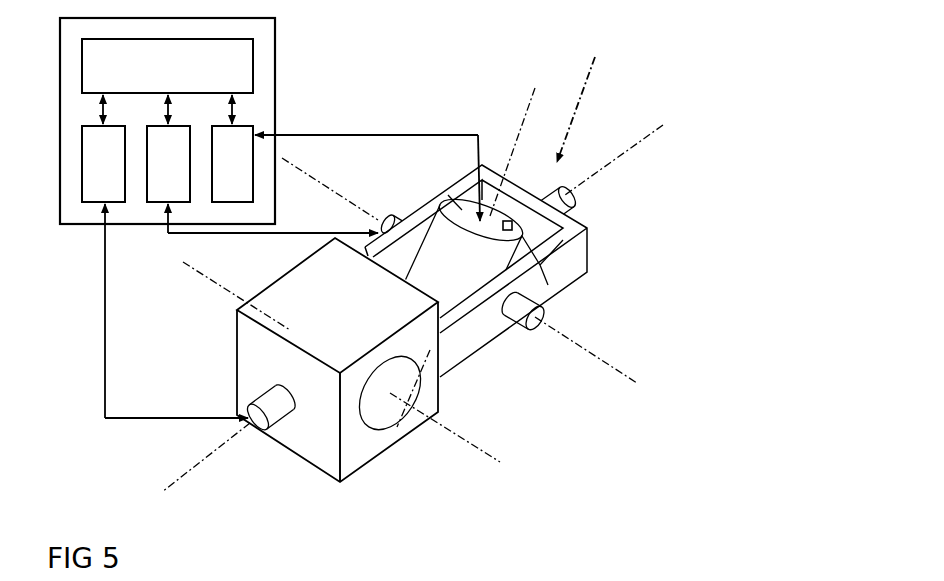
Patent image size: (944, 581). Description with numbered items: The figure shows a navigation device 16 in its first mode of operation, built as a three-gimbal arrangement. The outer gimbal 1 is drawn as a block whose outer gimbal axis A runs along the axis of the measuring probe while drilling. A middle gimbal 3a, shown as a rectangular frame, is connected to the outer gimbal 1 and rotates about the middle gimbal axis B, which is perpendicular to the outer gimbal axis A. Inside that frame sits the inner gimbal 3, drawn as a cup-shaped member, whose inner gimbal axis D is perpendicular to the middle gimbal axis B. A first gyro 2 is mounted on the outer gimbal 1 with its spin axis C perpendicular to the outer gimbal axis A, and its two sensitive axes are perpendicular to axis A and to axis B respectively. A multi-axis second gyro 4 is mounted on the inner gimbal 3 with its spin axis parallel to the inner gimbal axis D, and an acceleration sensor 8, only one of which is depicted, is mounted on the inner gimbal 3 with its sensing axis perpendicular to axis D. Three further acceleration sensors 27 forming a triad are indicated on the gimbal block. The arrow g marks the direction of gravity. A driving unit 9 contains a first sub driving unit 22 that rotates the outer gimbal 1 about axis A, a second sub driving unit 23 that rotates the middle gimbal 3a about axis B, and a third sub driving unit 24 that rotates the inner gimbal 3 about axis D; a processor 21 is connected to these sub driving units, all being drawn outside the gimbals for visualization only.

The driving unit 9 is at (275, 40).
The processor 21 is at (253, 48).
The first sub driving unit 22 is at (112, 164).
The second sub driving unit 23 is at (177, 164).
The third sub driving unit 24 is at (241, 164).
The outer gimbal 1 is at (247, 357).
The first gyro 2 is at (373, 421).
The further acceleration sensors 27 is at (332, 335).
The middle gimbal 3a is at (442, 222).
The inner gimbal 3 is at (503, 218).
The second gyro 4 is at (457, 216).
The acceleration sensor 8 is at (565, 234).
The navigation device 16 is at (682, 99).
The inner gimbal axis D is at (518, 136).
The gravity direction g is at (593, 63).
The outer gimbal axis A is at (190, 471).
The middle gimbal axis B is at (600, 267).
The spin axis C is at (353, 324).